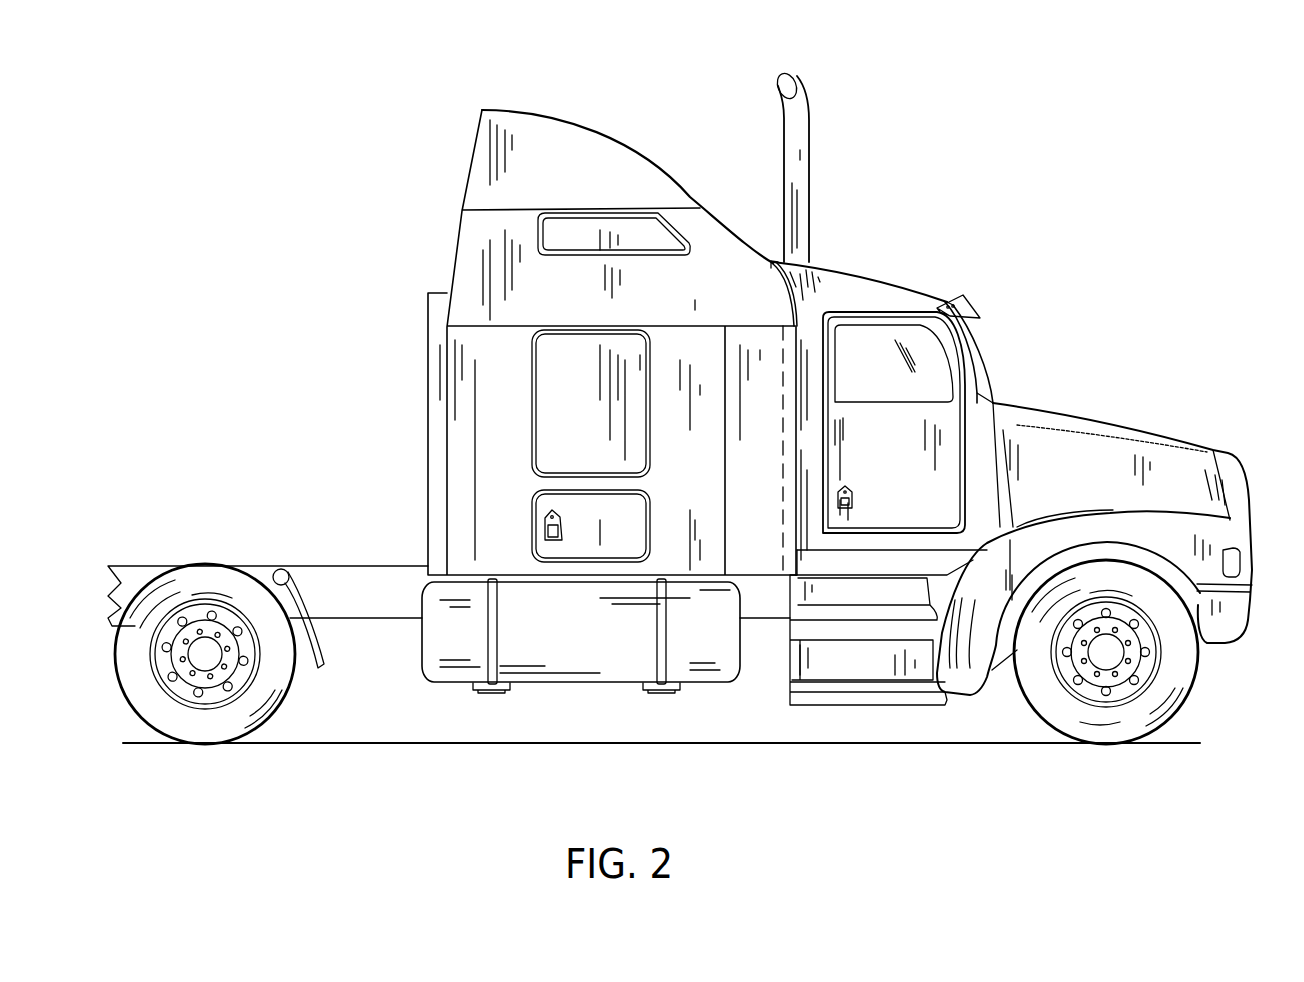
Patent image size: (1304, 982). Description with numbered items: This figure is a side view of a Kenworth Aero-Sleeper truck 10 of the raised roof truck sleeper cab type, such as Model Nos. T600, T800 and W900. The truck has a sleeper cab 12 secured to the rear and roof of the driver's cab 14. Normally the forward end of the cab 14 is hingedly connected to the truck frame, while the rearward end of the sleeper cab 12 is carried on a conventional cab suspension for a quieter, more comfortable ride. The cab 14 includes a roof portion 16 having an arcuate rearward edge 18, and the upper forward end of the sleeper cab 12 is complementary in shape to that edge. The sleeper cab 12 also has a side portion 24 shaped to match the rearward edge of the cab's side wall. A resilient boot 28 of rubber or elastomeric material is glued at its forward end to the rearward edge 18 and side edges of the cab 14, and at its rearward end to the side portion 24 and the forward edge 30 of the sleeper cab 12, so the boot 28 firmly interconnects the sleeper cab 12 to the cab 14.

The Kenworth Aero-Sleeper truck 10 is at (1003, 218).
The sleeper cab 12 is at (605, 134).
The driver's cab 14 is at (977, 357).
The roof portion 16 is at (890, 288).
The arcuate rearward edge 18 is at (807, 280).
The side portion 24 is at (767, 441).
The resilient boot 28 is at (790, 303).
The forward edge 30 is at (773, 273).